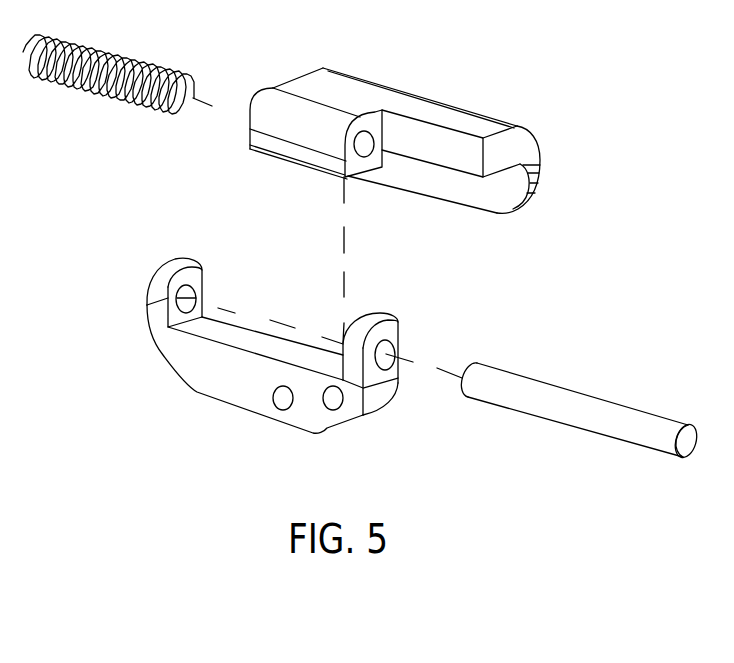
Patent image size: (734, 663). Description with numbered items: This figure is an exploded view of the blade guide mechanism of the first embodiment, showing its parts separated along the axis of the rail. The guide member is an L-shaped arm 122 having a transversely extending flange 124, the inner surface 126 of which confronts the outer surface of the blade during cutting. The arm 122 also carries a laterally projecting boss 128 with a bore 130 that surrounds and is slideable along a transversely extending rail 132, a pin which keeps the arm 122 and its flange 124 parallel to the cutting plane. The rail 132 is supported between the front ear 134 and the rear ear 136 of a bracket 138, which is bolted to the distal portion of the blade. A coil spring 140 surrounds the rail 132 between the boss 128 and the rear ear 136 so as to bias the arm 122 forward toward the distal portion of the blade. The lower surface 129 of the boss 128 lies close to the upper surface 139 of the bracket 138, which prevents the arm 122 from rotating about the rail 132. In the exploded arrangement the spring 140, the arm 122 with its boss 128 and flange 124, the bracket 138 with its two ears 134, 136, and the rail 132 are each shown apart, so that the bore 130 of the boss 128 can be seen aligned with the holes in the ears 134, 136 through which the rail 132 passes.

The L-shaped arm 122 is at (366, 97).
The transversely extending flange 124 is at (541, 178).
The inner surface of flange 126 is at (473, 194).
The laterally projecting boss 128 is at (270, 121).
The lower surface of boss 129 is at (302, 167).
The bore 130 is at (364, 157).
The rail 132 is at (552, 403).
The front ear 134 is at (391, 334).
The rear ear 136 is at (166, 288).
The bracket 138 is at (208, 388).
The upper surface of bracket 139 is at (208, 328).
The coil spring 140 is at (107, 51).